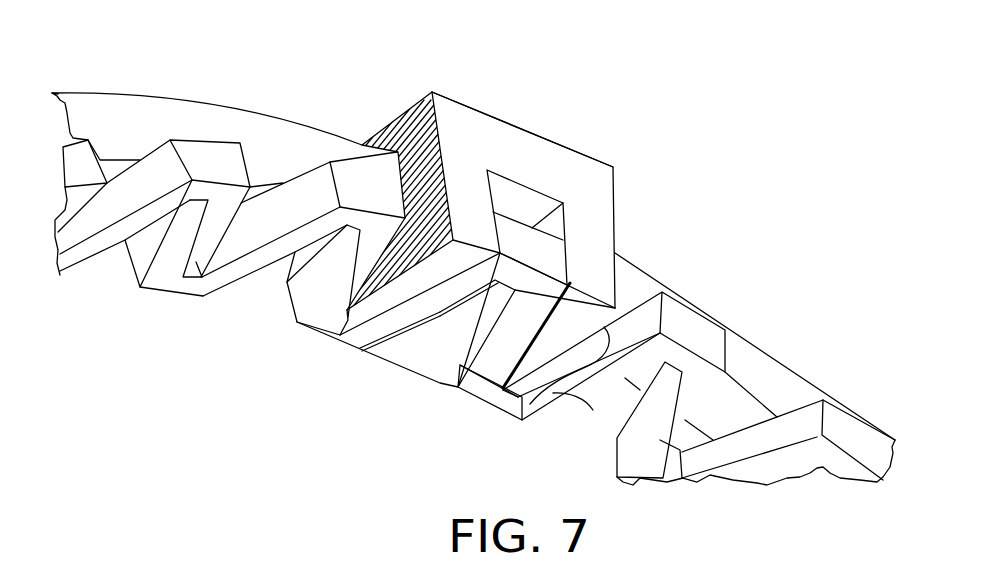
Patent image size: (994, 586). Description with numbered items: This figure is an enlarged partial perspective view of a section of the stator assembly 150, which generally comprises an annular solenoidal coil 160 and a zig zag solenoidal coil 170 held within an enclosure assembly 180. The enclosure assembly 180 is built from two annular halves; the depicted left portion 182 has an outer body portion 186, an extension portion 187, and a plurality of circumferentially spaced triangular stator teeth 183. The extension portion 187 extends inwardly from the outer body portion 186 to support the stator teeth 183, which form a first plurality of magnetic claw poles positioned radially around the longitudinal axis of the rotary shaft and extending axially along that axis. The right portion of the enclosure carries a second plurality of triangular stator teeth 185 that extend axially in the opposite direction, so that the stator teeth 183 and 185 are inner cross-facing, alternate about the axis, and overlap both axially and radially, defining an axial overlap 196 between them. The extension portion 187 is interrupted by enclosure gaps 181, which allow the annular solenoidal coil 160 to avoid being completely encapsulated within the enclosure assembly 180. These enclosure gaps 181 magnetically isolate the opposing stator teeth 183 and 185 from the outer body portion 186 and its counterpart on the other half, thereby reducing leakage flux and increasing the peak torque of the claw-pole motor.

The stator assembly 150 is at (427, 70).
The annular solenoidal coil 160 is at (776, 366).
The zig zag solenoidal coil 170 is at (146, 258).
The enclosure assembly 180 is at (581, 139).
The enclosure gaps 181 is at (536, 203).
The left portion 182 is at (510, 114).
The stator teeth 183 is at (430, 268).
The stator teeth 185 is at (428, 346).
The outer body portion 186 is at (529, 158).
The extension portion 187 is at (412, 170).
The axial overlap 196 is at (593, 410).